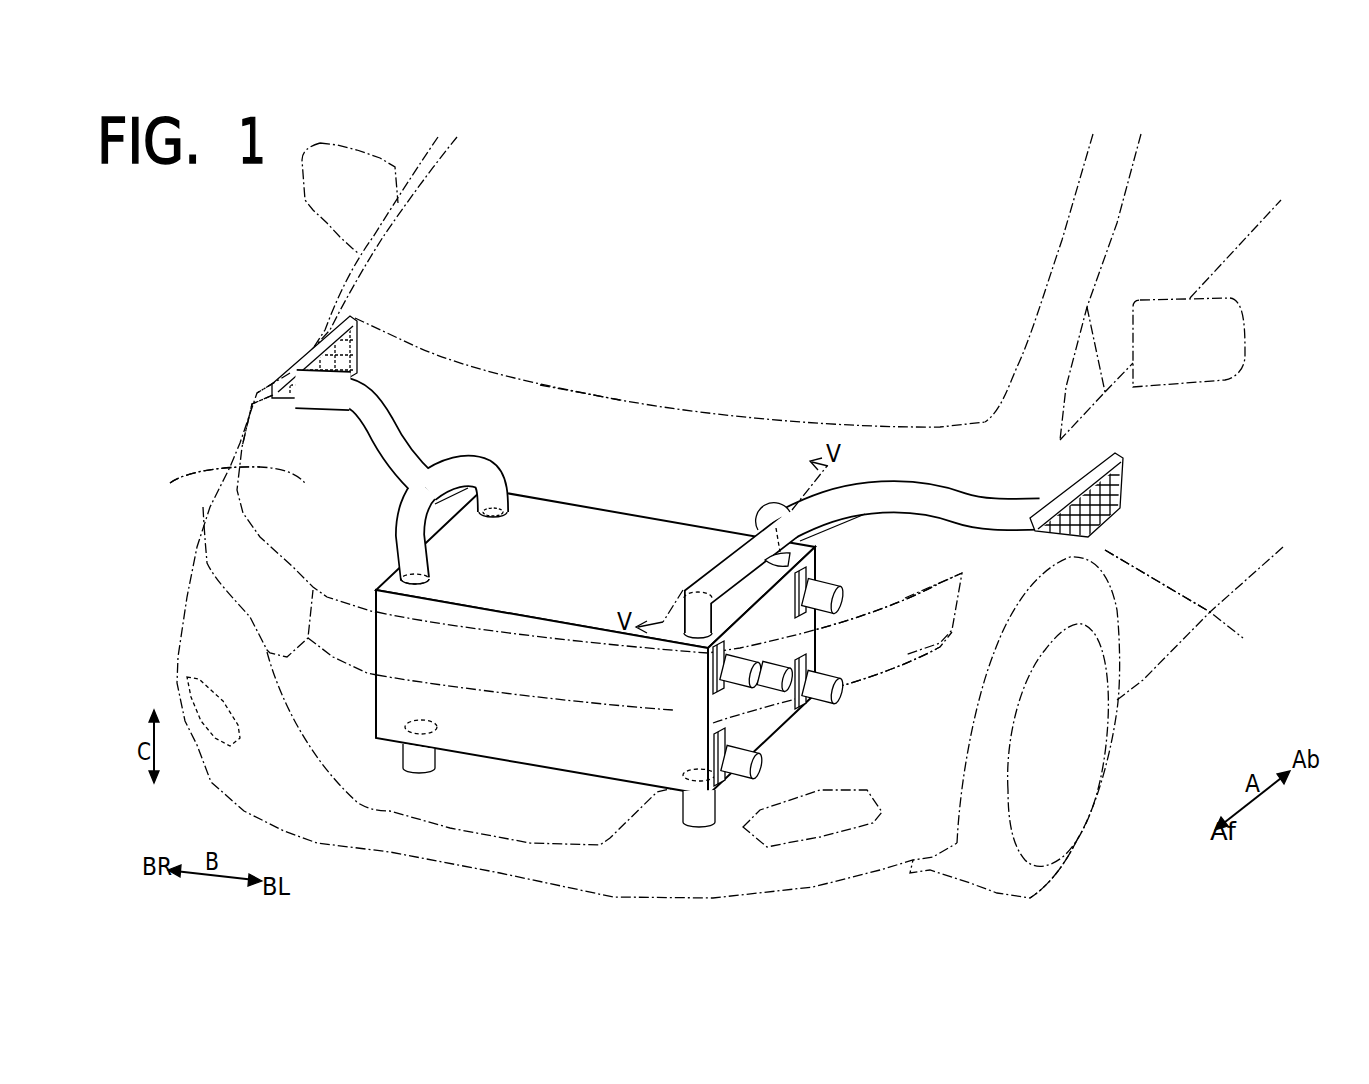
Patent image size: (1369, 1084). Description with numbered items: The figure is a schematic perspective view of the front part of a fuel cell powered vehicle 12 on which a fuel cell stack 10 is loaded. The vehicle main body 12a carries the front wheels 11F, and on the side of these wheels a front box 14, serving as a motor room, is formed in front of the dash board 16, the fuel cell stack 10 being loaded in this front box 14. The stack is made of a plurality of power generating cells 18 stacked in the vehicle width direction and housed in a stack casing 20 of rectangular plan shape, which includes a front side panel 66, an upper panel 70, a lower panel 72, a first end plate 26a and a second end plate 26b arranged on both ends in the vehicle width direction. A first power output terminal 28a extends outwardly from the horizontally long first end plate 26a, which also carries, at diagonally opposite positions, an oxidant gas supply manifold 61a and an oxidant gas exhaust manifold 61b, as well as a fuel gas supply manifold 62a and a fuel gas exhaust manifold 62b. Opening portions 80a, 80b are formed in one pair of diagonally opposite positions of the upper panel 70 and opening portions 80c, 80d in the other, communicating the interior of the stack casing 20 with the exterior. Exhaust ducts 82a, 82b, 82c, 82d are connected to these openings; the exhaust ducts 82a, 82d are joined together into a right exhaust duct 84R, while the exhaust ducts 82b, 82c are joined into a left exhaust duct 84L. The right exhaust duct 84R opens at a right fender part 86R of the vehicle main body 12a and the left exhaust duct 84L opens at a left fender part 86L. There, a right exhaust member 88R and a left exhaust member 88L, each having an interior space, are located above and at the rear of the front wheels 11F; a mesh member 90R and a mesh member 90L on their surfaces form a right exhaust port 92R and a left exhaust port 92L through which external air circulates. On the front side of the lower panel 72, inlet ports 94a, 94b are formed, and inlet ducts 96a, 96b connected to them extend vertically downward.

The fuel cell stack 10 is at (569, 490).
The fuel cell powered vehicle 12 is at (236, 253).
The vehicle main body 12a is at (256, 402).
The front box 14 is at (175, 481).
The dash board 16 is at (578, 398).
The power generating cell 18 is at (555, 762).
The stack casing 20 is at (540, 776).
The first end plate 26a is at (764, 736).
The second end plate 26b is at (376, 700).
The first power output terminal 28a is at (779, 700).
The oxidant gas supply manifold 61a is at (840, 596).
The oxidant gas exhaust manifold 61b is at (752, 772).
The fuel gas supply manifold 62a is at (720, 667).
The fuel gas exhaust manifold 62b is at (830, 672).
The front side panel 66 is at (608, 772).
The upper panel 70 is at (619, 524).
The lower panel 72 is at (477, 757).
The opening portion 80a is at (403, 576).
The opening portion 80b is at (777, 522).
The opening portion 80c is at (691, 600).
The opening portion 80d is at (496, 517).
The exhaust duct 82a is at (403, 530).
The exhaust duct 82b is at (782, 512).
The exhaust duct 82c is at (724, 573).
The exhaust duct 82d is at (498, 482).
The right exhaust duct 84R is at (341, 400).
The left exhaust duct 84L is at (960, 497).
The right fender part 86R is at (256, 414).
The left fender part 86L is at (1210, 612).
The right exhaust member 88R is at (322, 336).
The left exhaust member 88L is at (1111, 492).
The mesh member 90R is at (357, 360).
The mesh member 90L is at (1122, 493).
The right exhaust port 92R is at (355, 352).
The left exhaust port 92L is at (1100, 510).
The inlet port 94a is at (435, 745).
The inlet port 94b is at (690, 792).
The inlet duct 96a is at (420, 770).
The inlet duct 96b is at (705, 826).
The front wheel 11F is at (1082, 842).